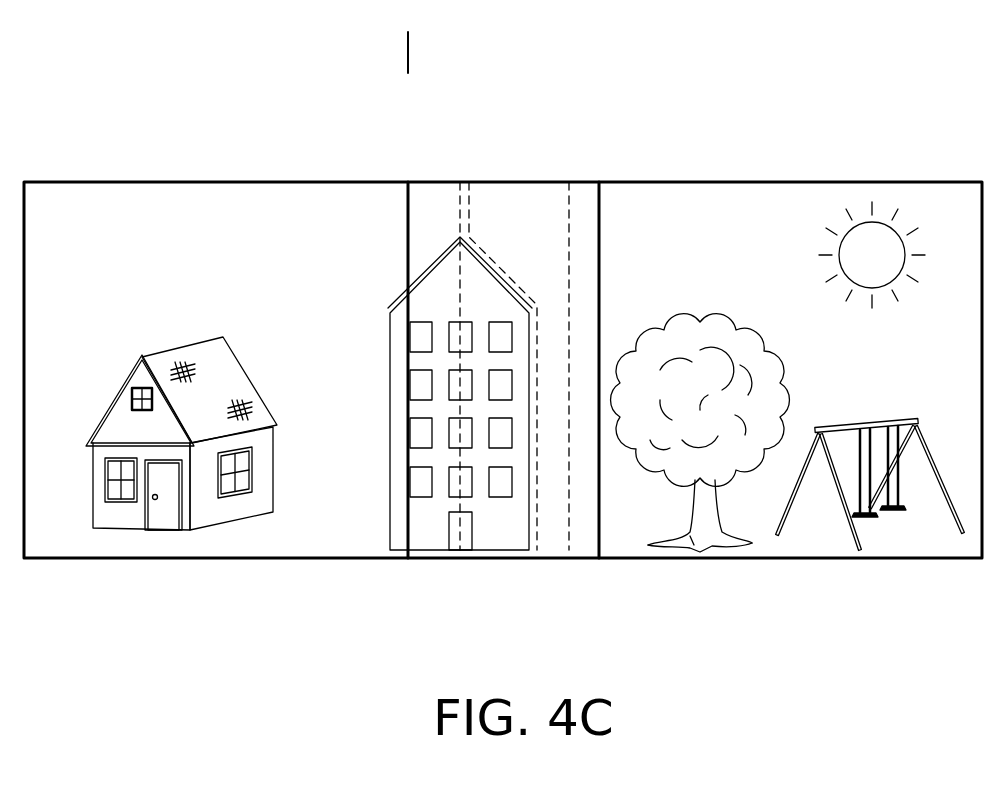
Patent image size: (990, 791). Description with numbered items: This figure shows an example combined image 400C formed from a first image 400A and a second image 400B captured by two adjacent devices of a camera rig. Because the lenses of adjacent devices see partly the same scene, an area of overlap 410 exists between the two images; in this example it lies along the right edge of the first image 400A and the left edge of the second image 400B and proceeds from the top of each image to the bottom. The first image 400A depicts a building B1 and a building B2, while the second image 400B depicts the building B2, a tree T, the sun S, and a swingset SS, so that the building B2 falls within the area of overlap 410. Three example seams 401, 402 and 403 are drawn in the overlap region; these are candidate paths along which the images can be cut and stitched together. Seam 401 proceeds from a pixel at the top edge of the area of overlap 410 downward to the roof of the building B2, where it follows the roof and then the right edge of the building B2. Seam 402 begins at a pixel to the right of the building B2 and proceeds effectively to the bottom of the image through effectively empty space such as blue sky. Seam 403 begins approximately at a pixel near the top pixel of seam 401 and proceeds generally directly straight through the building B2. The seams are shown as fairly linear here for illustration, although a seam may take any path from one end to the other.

The first image 400A is at (599, 173).
The second image 400B is at (982, 568).
The combined image 400C is at (884, 52).
The area of overlap 410 is at (599, 52).
The seam 401 is at (497, 265).
The seam 402 is at (569, 246).
The seam 403 is at (460, 277).
The building B1 is at (190, 343).
The building B2 is at (390, 348).
The tree T is at (658, 346).
The sun S is at (840, 247).
The swingset SS is at (843, 427).